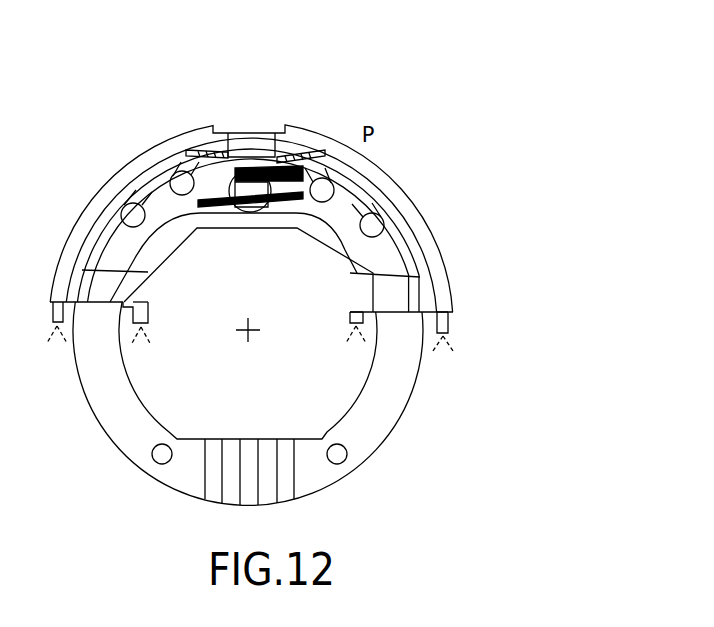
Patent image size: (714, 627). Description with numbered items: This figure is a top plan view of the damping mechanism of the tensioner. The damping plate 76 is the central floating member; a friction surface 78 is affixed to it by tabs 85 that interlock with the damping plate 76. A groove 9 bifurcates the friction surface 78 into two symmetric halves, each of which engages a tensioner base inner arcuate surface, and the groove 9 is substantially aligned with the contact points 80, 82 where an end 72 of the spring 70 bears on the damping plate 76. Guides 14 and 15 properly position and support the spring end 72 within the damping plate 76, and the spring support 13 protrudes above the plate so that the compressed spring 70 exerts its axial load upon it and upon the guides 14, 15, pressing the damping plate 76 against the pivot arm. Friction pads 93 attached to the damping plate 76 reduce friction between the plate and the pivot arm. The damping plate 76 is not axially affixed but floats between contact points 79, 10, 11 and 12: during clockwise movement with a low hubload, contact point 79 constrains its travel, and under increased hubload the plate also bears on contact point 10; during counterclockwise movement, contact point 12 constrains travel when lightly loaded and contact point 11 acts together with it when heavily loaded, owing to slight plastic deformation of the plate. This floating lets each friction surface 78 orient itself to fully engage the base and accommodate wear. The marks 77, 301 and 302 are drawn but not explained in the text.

The groove 9 is at (222, 129).
The contact point 10 is at (55, 324).
The contact point 11 is at (455, 352).
The contact point 12 is at (350, 336).
The spring support 13 is at (248, 478).
The guide 14 is at (80, 268).
The guide 15 is at (440, 297).
The spring 70 is at (123, 248).
The spring end 72 is at (309, 187).
The damping plate 76 is at (100, 403).
The leg stop 77 is at (148, 310).
The friction surface 78 is at (128, 155).
The contact point 79 is at (148, 314).
The contact point 80 is at (275, 129).
The contact point 82 is at (228, 157).
The tabs 85 is at (183, 178).
The friction pads 93 is at (158, 457).
The leg 301 is at (350, 320).
The leg 302 is at (450, 327).